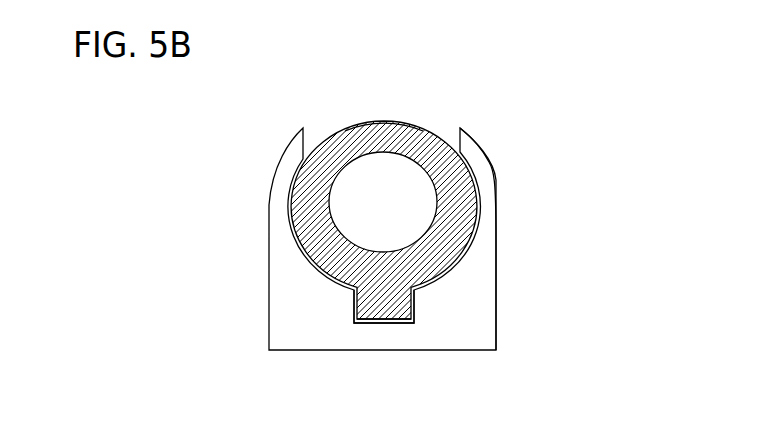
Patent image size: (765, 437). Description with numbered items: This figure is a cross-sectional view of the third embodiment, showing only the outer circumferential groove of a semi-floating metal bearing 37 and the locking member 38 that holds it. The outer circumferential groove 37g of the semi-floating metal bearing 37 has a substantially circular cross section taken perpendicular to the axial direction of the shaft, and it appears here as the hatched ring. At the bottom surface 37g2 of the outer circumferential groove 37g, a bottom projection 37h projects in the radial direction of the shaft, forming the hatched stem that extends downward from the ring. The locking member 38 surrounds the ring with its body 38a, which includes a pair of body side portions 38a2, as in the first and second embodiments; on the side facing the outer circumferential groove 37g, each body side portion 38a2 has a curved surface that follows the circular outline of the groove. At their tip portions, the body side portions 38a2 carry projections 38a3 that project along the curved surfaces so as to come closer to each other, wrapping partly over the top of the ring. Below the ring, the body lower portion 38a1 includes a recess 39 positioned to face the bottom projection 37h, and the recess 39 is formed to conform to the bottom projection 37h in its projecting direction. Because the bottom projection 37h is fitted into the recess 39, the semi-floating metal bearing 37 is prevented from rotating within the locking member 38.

The semi-floating metal bearing 37 is at (340, 115).
The outer circumferential groove 37g is at (401, 73).
The bottom surface 37g2 is at (375, 120).
The bottom projection 37h is at (383, 320).
The locking member 38 is at (470, 239).
The holding portion 38a is at (565, 239).
The body lower portion 38a1 is at (496, 290).
The body side portions 38a2 is at (496, 212).
The projections 38a3 is at (483, 150).
The recess 39 is at (412, 312).